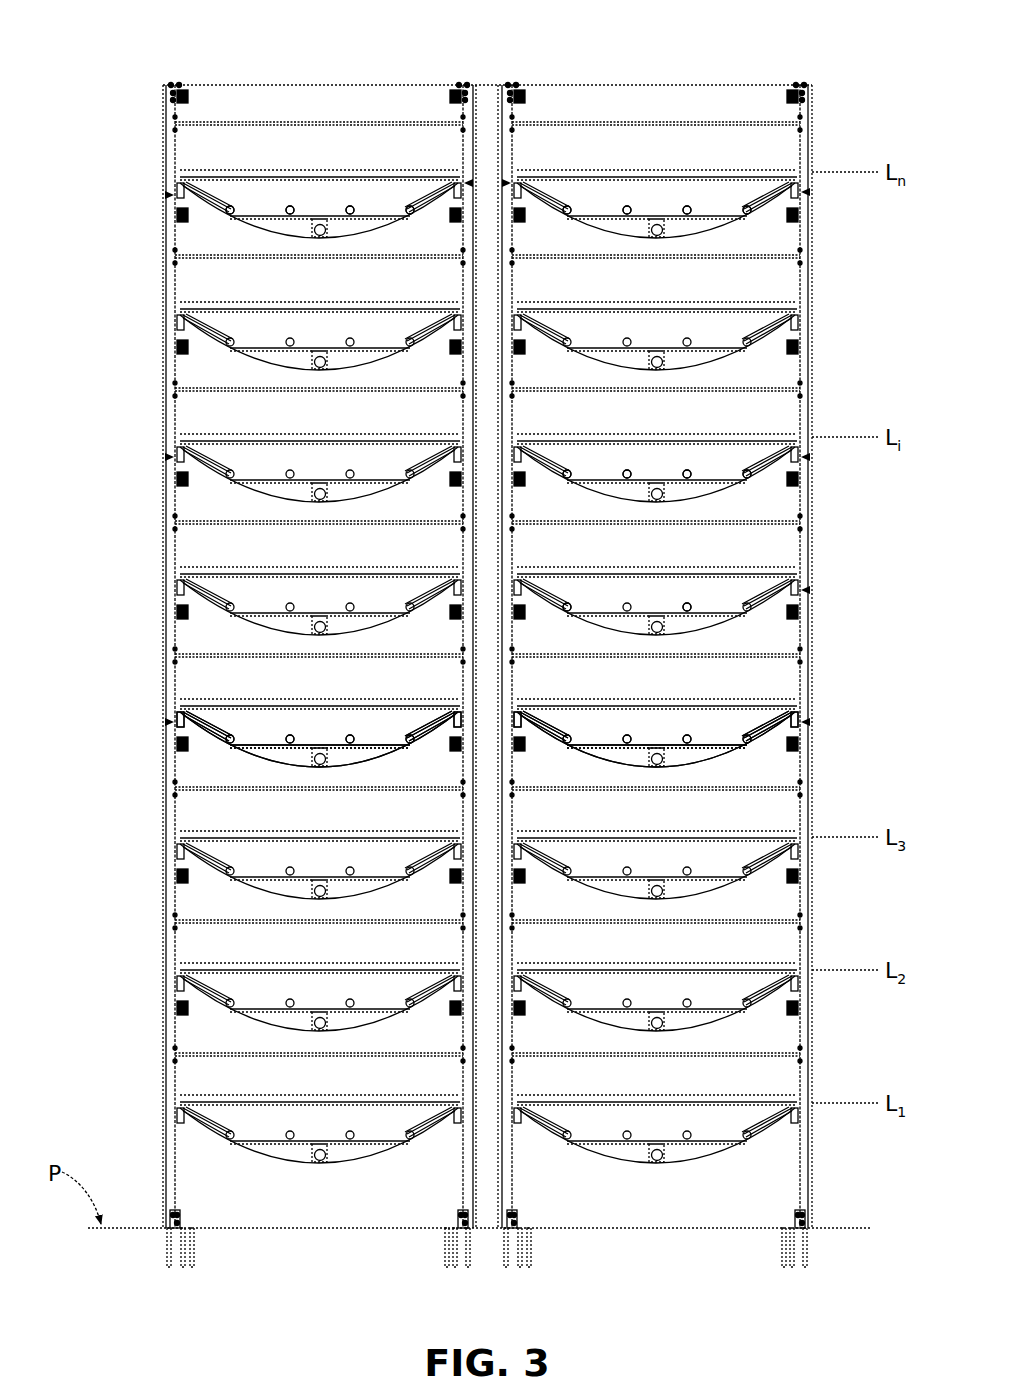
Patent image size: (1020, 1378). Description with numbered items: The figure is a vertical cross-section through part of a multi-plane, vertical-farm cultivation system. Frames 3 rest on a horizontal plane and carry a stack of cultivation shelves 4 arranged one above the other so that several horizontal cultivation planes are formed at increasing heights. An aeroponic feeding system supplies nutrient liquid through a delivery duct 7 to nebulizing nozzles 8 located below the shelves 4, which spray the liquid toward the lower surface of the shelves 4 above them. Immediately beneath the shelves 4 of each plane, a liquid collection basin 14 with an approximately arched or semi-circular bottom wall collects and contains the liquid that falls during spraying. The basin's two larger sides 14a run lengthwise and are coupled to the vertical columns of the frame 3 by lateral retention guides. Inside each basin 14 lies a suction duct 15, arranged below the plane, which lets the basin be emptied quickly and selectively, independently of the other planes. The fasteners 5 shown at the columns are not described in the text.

The frame 3 is at (502, 108).
The cultivation shelf 4 is at (192, 171).
The bracket fastener 5 is at (166, 195).
The delivery duct 7 is at (289, 205).
The nozzle 8 is at (626, 470).
The liquid collection basin 14 is at (212, 345).
The larger side 14a is at (170, 713).
The suction duct 15 is at (322, 238).